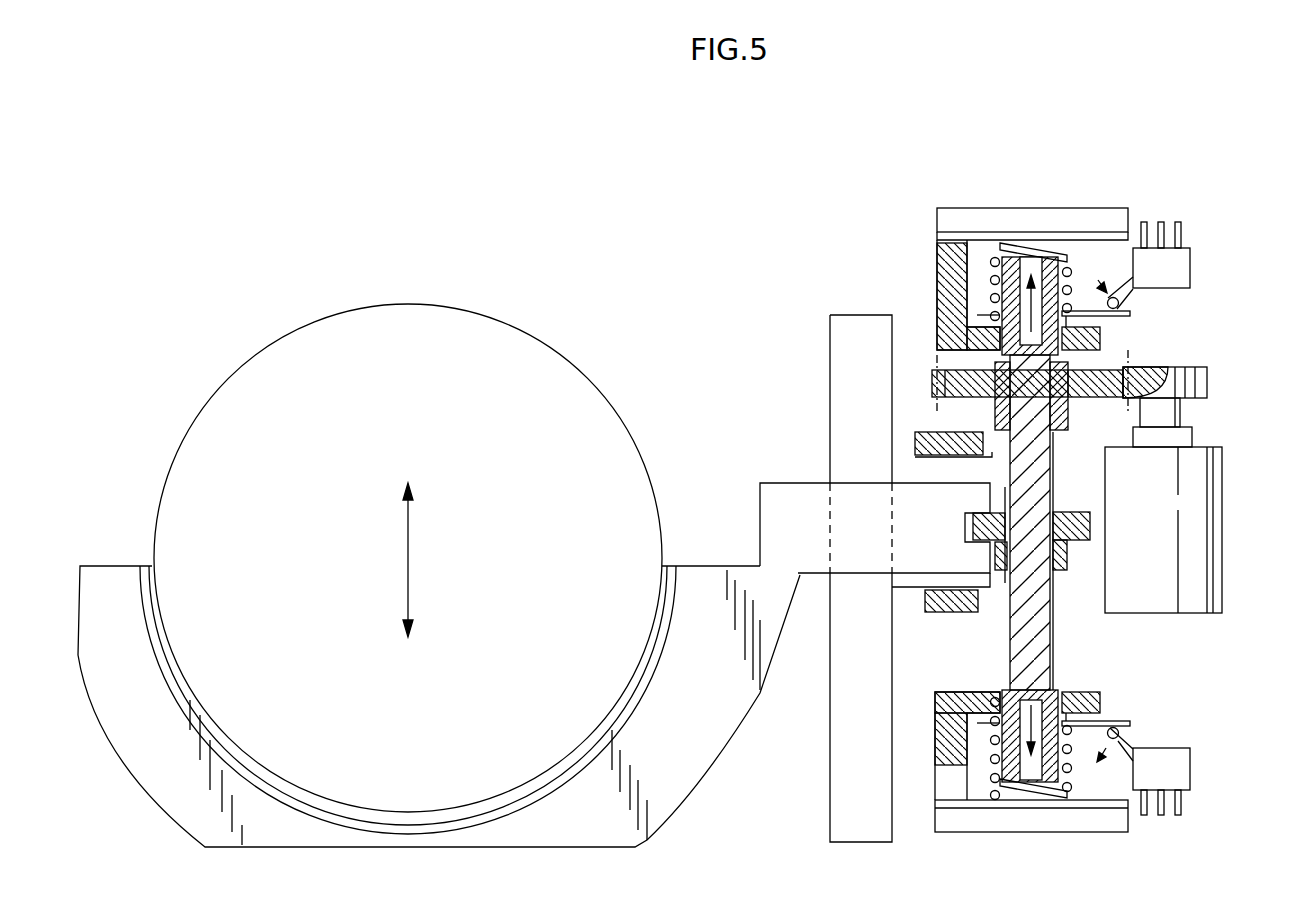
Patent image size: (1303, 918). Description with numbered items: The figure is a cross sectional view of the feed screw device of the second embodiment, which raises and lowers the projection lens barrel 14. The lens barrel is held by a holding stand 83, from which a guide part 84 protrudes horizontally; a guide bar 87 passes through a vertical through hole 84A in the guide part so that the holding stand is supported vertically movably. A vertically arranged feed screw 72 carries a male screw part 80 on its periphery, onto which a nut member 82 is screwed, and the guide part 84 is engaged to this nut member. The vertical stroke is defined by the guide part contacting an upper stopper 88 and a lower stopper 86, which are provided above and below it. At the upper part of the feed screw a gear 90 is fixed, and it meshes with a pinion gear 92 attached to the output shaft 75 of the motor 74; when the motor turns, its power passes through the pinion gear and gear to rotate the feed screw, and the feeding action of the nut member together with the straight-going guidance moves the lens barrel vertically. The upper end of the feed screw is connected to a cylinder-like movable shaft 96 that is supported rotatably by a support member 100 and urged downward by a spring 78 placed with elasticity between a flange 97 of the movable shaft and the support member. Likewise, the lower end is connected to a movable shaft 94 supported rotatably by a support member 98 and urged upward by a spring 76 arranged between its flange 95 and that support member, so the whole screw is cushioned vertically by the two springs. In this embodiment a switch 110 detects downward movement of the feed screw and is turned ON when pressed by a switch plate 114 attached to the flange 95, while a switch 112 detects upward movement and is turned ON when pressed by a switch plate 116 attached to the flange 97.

The projection lens barrel 14 is at (542, 331).
The holding stand 83 is at (464, 843).
The guide part 84 is at (906, 455).
The through hole 84A is at (833, 520).
The guide bar 87 is at (840, 437).
The stopper 88 is at (950, 455).
The stopper 86 is at (938, 612).
The nut member 82 is at (1073, 516).
The male screw part 80 is at (1052, 620).
The feed screw 72 is at (1050, 655).
The gear 90 is at (1105, 372).
The pinion gear 92 is at (1180, 370).
The output shaft 75 is at (1190, 412).
The motor 74 is at (1215, 510).
The support member 100 is at (990, 215).
The flange 97 is at (965, 318).
The spring 78 is at (1085, 310).
The movable shaft 96 is at (1000, 270).
The switch plate 116 is at (1090, 312).
The switch 112 is at (1130, 290).
The support member 98 is at (965, 827).
The flange 95 is at (985, 696).
The spring 76 is at (1075, 776).
The movable shaft 94 is at (1010, 760).
The switch plate 114 is at (1115, 722).
The switch 110 is at (1130, 735).